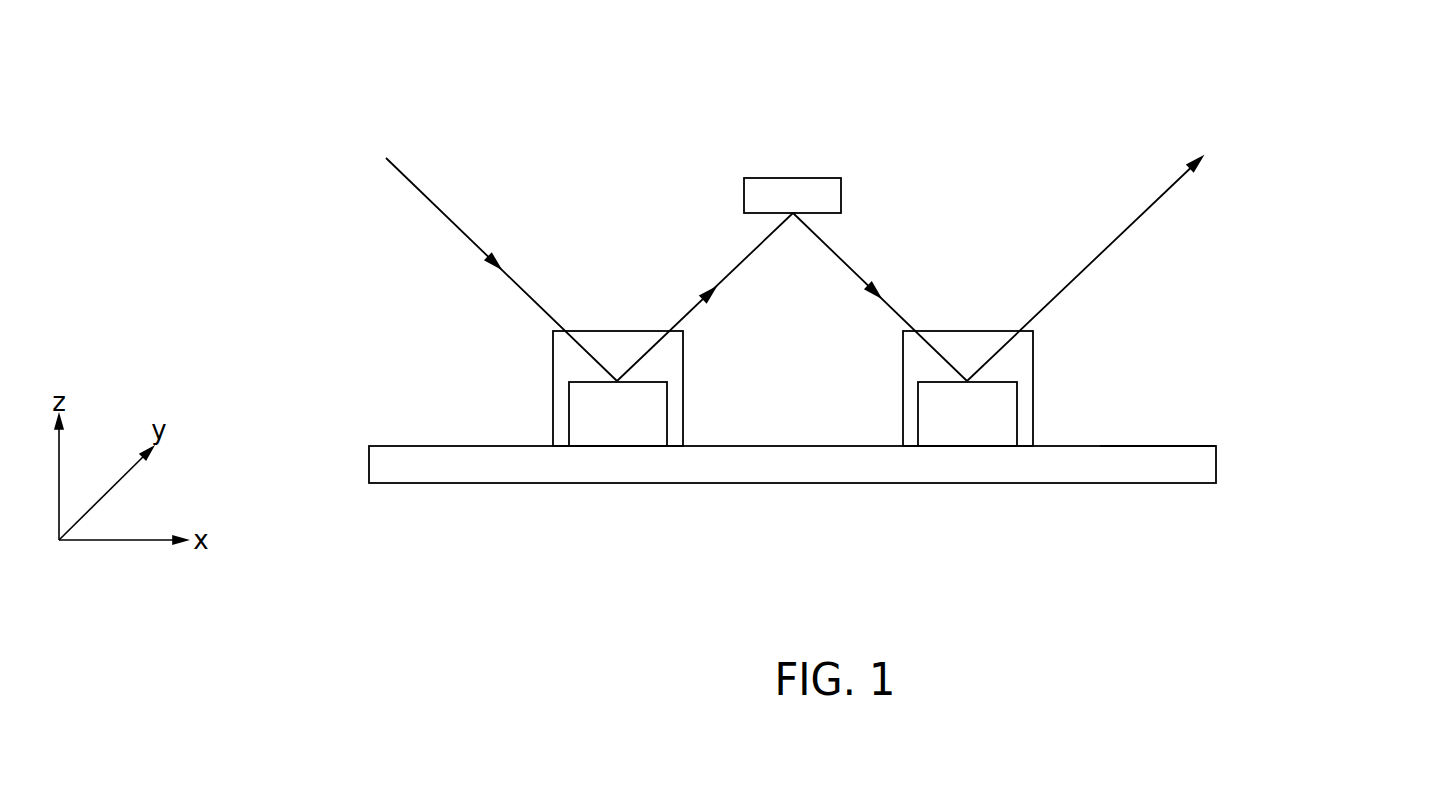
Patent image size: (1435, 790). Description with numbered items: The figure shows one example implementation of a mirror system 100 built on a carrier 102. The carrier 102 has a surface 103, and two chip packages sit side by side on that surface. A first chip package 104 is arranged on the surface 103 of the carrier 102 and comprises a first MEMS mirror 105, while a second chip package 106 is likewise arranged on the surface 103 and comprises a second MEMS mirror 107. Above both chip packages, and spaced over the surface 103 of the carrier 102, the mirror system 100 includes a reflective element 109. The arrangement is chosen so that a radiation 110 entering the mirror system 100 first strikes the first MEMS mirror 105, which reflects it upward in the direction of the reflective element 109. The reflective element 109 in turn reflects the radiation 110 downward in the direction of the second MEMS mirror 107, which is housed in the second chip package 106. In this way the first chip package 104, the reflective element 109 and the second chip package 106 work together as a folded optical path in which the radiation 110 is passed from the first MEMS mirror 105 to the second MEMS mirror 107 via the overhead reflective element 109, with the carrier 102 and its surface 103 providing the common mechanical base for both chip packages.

The mirror system 100 is at (1316, 92).
The carrier 102 is at (1220, 459).
The surface 103 is at (1193, 445).
The first chip package 104 is at (553, 355).
The first MEMS mirror 105 is at (569, 410).
The second chip package 106 is at (1034, 355).
The second MEMS mirror 107 is at (1017, 410).
The reflective element 109 is at (744, 196).
The radiation 110 is at (412, 182).